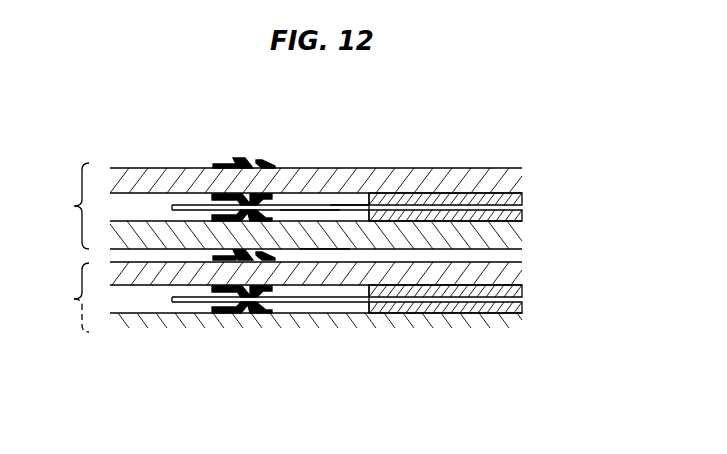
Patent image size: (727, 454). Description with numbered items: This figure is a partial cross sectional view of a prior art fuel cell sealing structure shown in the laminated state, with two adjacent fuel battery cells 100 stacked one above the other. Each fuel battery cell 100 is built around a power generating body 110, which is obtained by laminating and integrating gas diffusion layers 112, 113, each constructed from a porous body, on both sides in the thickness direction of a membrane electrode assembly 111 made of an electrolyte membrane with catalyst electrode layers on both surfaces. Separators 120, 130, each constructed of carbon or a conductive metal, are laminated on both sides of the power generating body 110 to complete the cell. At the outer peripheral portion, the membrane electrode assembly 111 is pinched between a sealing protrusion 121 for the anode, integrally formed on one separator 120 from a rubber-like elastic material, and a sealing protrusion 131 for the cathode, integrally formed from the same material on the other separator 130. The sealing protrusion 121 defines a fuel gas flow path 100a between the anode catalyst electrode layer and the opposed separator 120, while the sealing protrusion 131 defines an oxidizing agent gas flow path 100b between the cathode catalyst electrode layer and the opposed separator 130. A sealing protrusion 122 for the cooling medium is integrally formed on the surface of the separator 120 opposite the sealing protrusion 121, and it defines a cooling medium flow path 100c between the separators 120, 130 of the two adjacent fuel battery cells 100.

The fuel battery cell 100 is at (59, 247).
The fuel gas flow path 100a is at (343, 190).
The oxidizing agent gas flow path 100b is at (300, 210).
The cooling medium flow path 100c is at (325, 260).
The power generating body 110 is at (527, 208).
The membrane electrode assembly 111 is at (190, 208).
The gas diffusion layer 112 is at (415, 198).
The gas diffusion layer 113 is at (462, 214).
The separator 120 is at (525, 178).
The sealing protrusion for anode 121 is at (238, 203).
The sealing protrusion for cooling medium 122 is at (243, 262).
The separator 130 is at (524, 235).
The sealing protrusion for cathode 131 is at (247, 216).